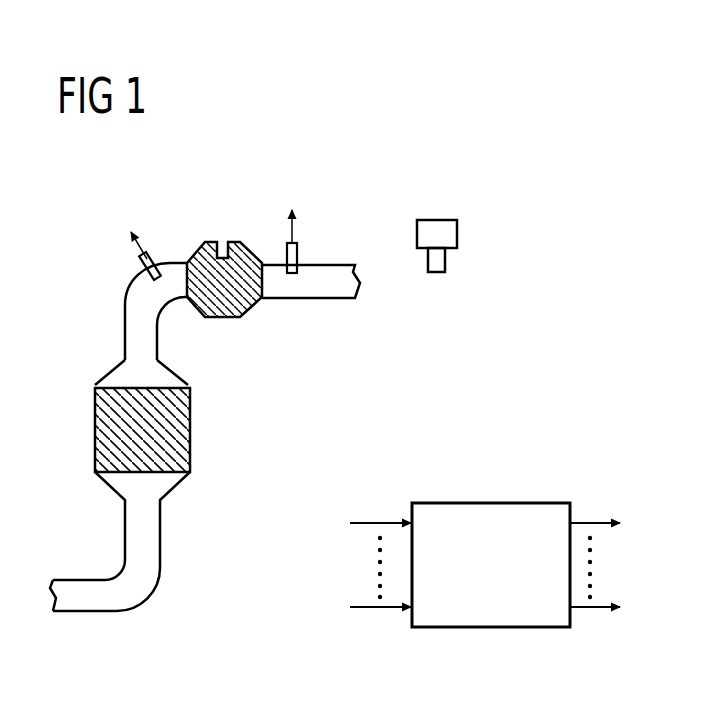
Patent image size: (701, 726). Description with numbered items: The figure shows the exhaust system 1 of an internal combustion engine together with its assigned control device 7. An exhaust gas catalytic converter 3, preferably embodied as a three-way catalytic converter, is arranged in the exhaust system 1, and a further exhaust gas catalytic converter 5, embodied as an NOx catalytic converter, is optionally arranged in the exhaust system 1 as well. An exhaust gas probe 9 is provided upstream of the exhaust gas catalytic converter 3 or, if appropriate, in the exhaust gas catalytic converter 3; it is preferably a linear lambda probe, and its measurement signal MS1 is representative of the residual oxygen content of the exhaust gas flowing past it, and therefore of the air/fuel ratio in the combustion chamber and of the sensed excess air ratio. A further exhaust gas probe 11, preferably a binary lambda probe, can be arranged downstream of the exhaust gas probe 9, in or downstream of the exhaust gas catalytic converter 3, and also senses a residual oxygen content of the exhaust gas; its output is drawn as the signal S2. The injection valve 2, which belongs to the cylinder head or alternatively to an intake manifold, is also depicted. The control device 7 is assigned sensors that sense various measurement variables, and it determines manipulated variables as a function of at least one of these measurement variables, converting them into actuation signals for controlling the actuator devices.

The exhaust system 1 is at (122, 287).
The injection valve 2 is at (457, 233).
The exhaust gas catalytic converter 3 is at (220, 313).
The further exhaust gas catalytic converter 5 is at (180, 437).
The control device 7 is at (490, 503).
The exhaust gas probe 9 is at (297, 252).
The further exhaust gas probe 11 is at (153, 259).
The sensor signal S2 is at (127, 222).
The measurement signal MS1 is at (293, 204).